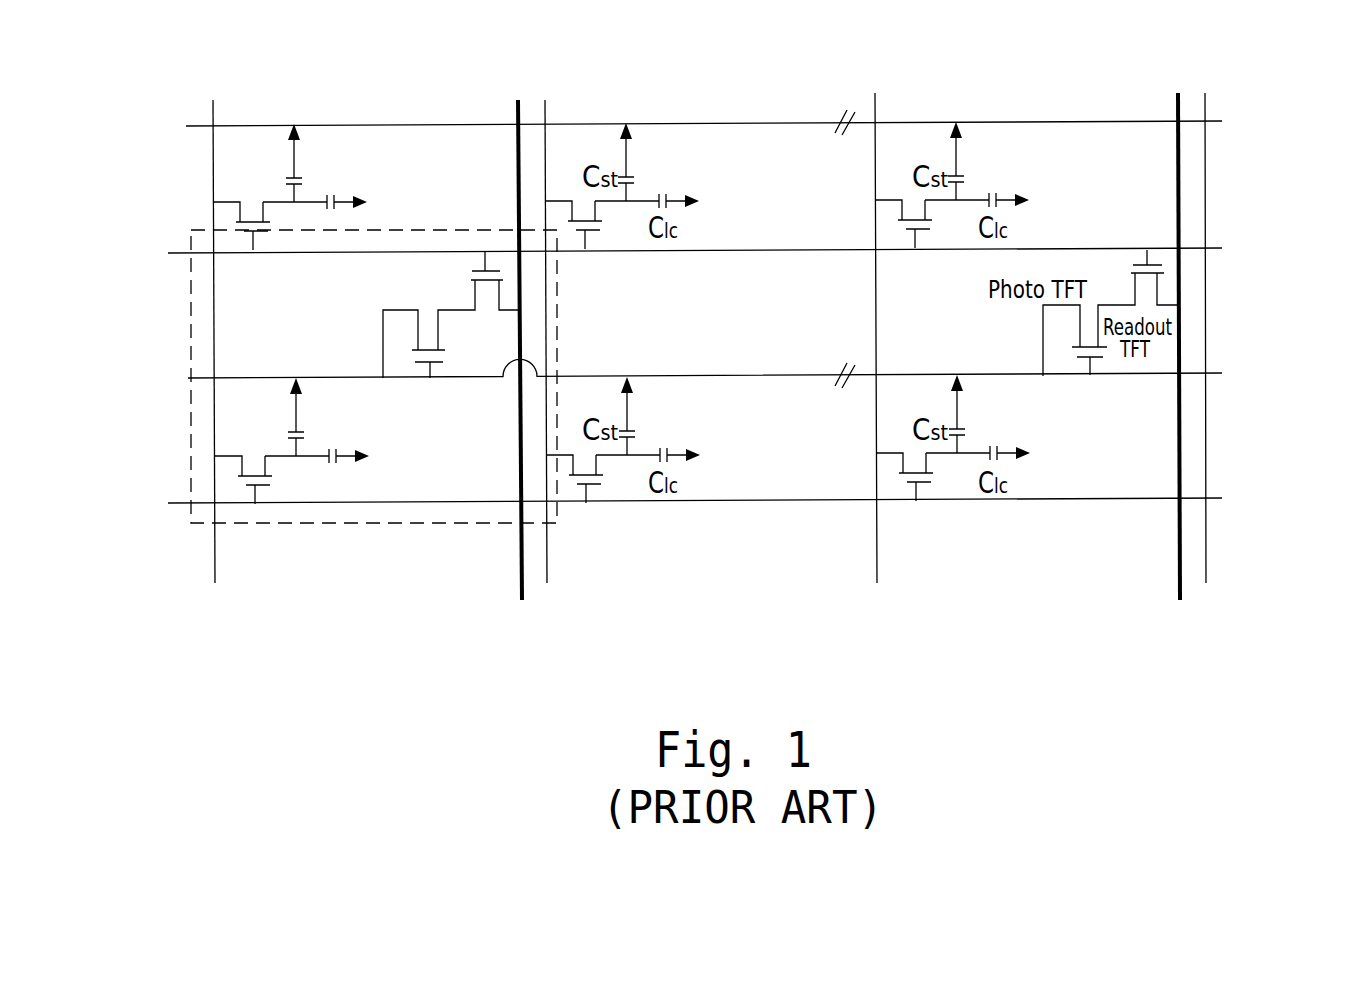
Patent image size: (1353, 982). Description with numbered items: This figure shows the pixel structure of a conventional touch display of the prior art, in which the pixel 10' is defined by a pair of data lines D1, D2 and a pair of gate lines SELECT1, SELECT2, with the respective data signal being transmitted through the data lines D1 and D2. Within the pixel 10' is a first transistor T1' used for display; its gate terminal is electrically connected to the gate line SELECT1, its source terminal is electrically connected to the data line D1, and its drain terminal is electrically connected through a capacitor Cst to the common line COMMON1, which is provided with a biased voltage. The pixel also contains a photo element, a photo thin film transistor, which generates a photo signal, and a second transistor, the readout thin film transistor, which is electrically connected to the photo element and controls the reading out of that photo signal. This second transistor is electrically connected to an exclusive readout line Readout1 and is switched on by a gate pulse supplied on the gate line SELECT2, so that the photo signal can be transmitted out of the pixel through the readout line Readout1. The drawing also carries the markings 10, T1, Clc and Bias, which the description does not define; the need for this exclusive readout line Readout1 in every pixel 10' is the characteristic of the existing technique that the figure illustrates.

The pixel 10' is at (374, 385).
The pixel 10 is at (374, 385).
The first transistor T1' is at (260, 480).
The switching thin film transistor T1 is at (260, 480).
The capacitor Cst is at (277, 163).
The liquid crystal capacitor Clc is at (342, 219).
The data line D1 is at (211, 317).
The data line D2 is at (543, 317).
The readout line Readout1 is at (527, 370).
The bias line Bias is at (735, 121).
The gate line SELECT1 is at (641, 503).
The gate line SELECT2 is at (639, 251).
The common line COMMON1 is at (769, 374).